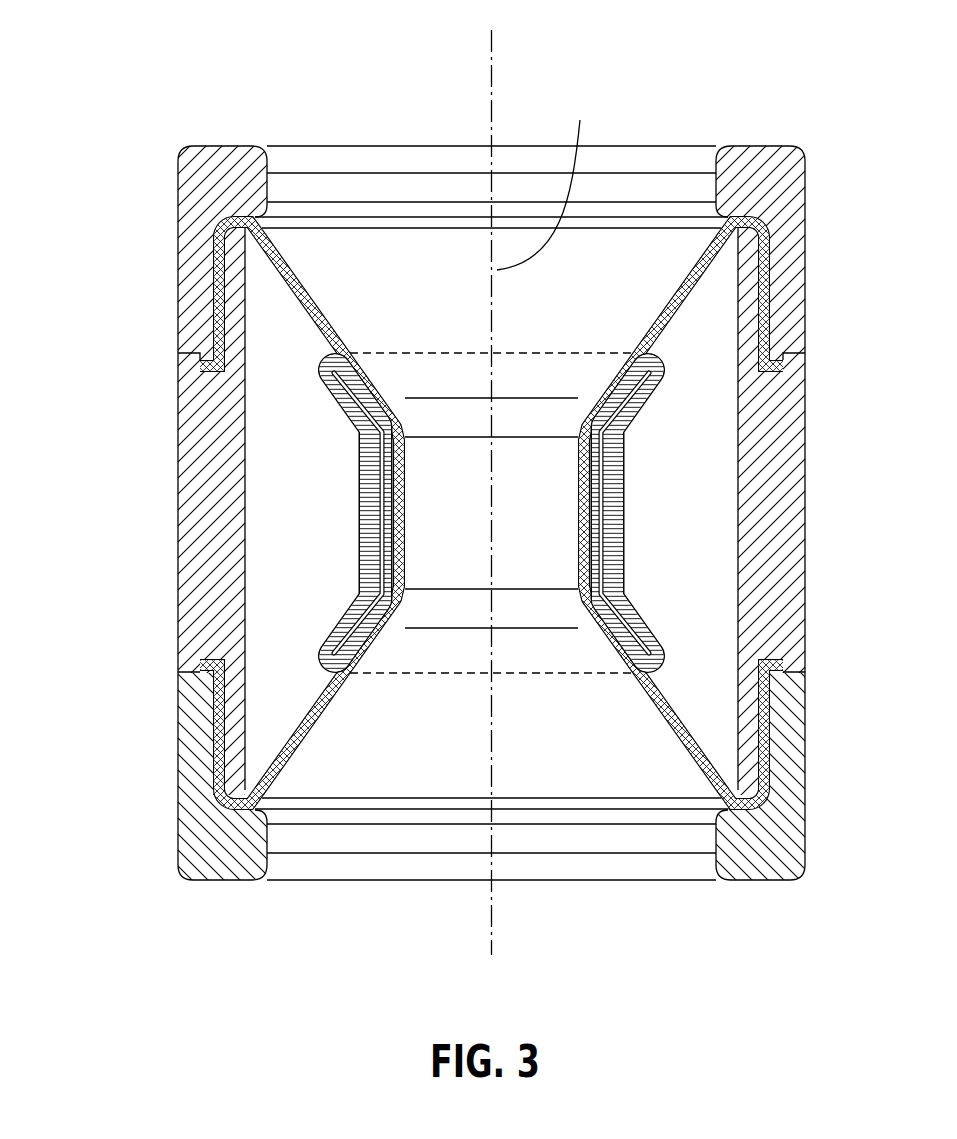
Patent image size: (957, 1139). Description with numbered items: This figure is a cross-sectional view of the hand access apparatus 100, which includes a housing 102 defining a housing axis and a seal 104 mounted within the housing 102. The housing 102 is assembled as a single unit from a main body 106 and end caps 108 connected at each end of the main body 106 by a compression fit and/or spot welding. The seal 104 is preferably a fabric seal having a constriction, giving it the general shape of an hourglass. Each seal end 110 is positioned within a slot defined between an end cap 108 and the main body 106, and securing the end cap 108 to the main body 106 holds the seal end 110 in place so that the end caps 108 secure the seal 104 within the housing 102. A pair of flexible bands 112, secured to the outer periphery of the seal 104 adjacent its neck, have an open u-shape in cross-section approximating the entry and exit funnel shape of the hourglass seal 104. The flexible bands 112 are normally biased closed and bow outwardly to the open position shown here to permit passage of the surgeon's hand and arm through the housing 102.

The hand access apparatus 100 is at (140, 611).
The housing 102 is at (160, 356).
The seal 104 is at (310, 280).
The main body 106 is at (773, 552).
The end caps 108 is at (214, 163).
The seal end 110 is at (215, 247).
The flexible bands 112 is at (367, 503).